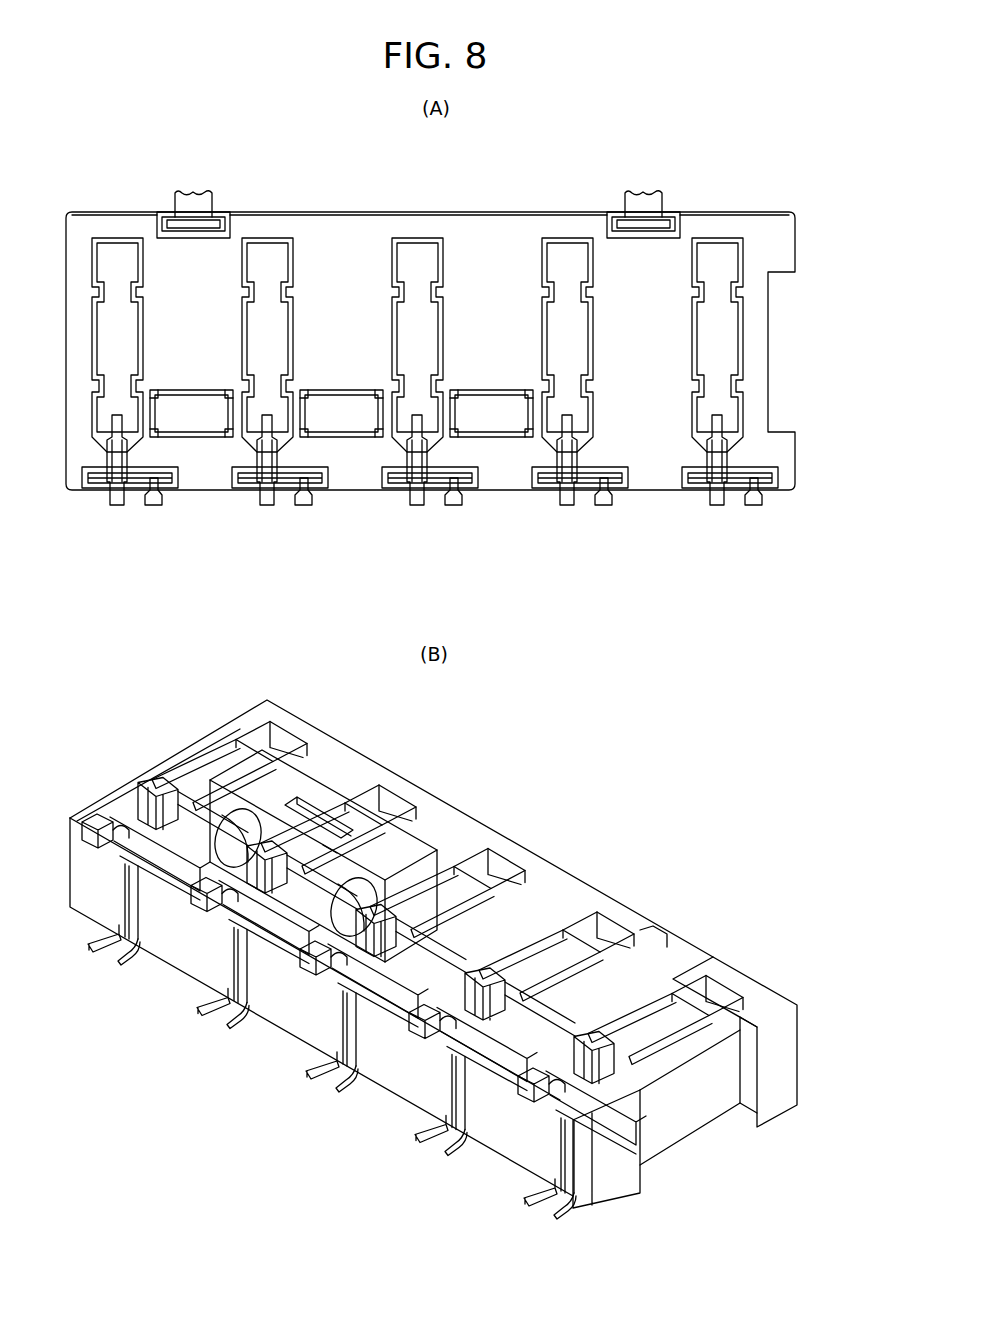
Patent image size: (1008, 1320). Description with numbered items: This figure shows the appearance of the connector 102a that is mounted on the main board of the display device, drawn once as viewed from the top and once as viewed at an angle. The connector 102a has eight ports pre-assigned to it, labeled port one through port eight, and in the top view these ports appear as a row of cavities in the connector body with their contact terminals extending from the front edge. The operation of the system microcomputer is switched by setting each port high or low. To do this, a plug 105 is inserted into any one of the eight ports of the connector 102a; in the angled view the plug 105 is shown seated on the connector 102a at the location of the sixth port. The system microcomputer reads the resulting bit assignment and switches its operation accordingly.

The connector 102a is at (714, 186).
The plug 105 is at (316, 790).